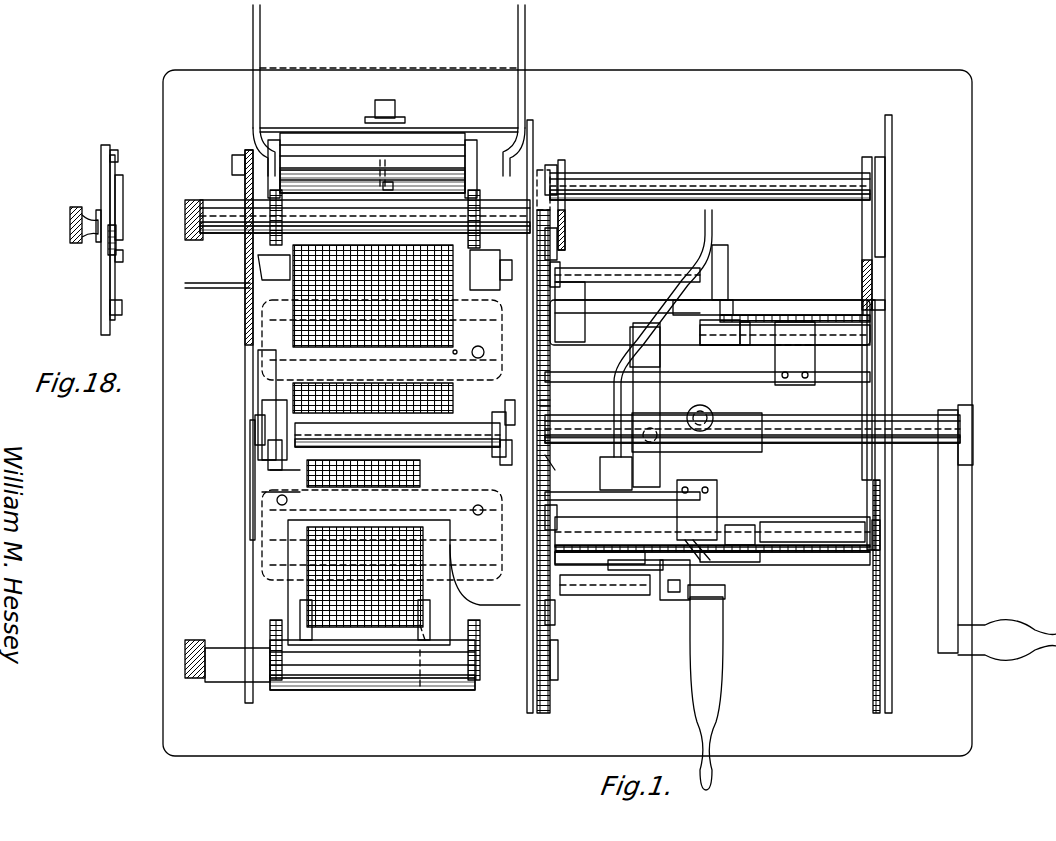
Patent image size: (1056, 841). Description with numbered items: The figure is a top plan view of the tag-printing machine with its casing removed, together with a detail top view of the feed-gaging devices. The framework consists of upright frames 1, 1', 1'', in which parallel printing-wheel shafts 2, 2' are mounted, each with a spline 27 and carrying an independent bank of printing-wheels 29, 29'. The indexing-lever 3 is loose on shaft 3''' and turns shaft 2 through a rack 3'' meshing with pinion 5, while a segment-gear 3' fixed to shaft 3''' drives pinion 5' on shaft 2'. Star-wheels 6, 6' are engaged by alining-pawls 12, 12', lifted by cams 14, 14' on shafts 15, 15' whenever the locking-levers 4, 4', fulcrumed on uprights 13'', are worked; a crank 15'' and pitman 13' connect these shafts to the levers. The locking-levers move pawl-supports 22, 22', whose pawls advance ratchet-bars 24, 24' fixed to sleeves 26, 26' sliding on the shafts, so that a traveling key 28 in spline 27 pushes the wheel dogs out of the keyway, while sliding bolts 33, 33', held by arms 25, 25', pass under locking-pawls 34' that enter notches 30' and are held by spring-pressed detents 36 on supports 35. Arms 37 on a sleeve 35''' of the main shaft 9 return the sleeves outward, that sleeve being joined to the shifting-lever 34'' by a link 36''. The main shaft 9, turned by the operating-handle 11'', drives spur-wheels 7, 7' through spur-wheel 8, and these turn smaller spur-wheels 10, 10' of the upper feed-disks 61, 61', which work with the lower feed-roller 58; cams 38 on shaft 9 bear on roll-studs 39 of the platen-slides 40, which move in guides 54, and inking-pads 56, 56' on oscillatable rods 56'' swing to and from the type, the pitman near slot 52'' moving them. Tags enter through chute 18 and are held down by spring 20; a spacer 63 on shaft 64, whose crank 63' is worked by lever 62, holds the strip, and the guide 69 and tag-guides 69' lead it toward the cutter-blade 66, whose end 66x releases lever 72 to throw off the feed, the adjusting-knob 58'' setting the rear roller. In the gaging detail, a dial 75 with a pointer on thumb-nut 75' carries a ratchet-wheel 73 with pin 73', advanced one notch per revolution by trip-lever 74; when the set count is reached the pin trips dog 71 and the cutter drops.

In FIG. 1, the upright frame 1 is at (567, 413).
In FIG. 1, the upright frame 1' is at (510, 422).
In FIG. 1, the upright frame 1'' is at (324, 582).
In FIG. 1, the printing-wheel shaft 2 is at (712, 571).
In FIG. 1, the printing-wheel shaft 2' is at (710, 334).
In FIG. 1, the indexing-lever 3 is at (846, 318).
In FIG. 1, the segment-gear 3' is at (894, 219).
In FIG. 1, the rack 3'' is at (856, 506).
In FIG. 1, the shaft 3''' is at (710, 196).
In FIG. 1, the locking-lever 4 is at (716, 548).
In FIG. 1, the locking-lever 4' is at (642, 348).
In FIG. 1, the pinion 5 is at (892, 535).
In FIG. 1, the pinion 5' is at (894, 297).
In FIG. 1, the star-wheel 6 is at (559, 612).
In FIG. 1, the star-wheel 6' is at (571, 312).
In FIG. 1, the spur-wheel 7 is at (560, 517).
In FIG. 1, the spur-wheel 7' is at (567, 272).
In FIG. 1, the spur-wheel 8 is at (551, 407).
In FIG. 1, the main operating-shaft 9 is at (627, 441).
In FIG. 1, the spur-wheel 10 is at (560, 461).
In FIG. 1, the spur-wheel 10' is at (571, 181).
In FIG. 1, the crank 11'' is at (978, 532).
In FIG. 1, the alining-pawl 12 is at (566, 665).
In FIG. 1, the alining-pawl 12' is at (572, 244).
In FIG. 1, the pitman 13' is at (667, 609).
In FIG. 1, the upright 13'' is at (633, 574).
In FIG. 1, the cam 14 is at (600, 570).
In FIG. 1, the cam 14' is at (627, 290).
In FIG. 1, the shaft 15 is at (605, 606).
In FIG. 1, the shaft 15' is at (627, 287).
In FIG. 1, the crank 15'' is at (671, 333).
In FIG. 1, the chute 18 is at (389, 90).
In FIG. 1, the spring 20 is at (375, 108).
In FIG. 1, the pawl-support 22 is at (605, 593).
In FIG. 1, the pawl-support 22' is at (704, 322).
In FIG. 1, the ratchet-bar 24 is at (738, 571).
In FIG. 1, the ratchet-bar 24' is at (785, 313).
In FIG. 1, the arm 25 is at (716, 508).
In FIG. 1, the arm 25' is at (795, 353).
In FIG. 1, the sleeve 26 is at (755, 522).
In FIG. 1, the sleeve 26' is at (762, 314).
In FIG. 1, the spline 27 is at (833, 530).
In FIG. 1, the traveling key 28 is at (592, 545).
In FIG. 1, the bank of printing-wheels 29 is at (316, 577).
In FIG. 1, the bank of printing-wheels 29' is at (324, 296).
In FIG. 1, the notch 30' is at (472, 344).
In FIG. 1, the sliding bolt 33 is at (622, 489).
In FIG. 1, the sliding bolt 33' is at (707, 368).
In FIG. 1, the locking-pawl 34' is at (355, 340).
In FIG. 1, the shifting-lever 34'' is at (673, 623).
In FIG. 1, the support 35 is at (353, 535).
In FIG. 1, the sleeve 35''' is at (697, 432).
In FIG. 1, the spring-pressed detent 36 is at (331, 431).
In FIG. 1, the link 36'' is at (678, 412).
In FIG. 1, the arm 37 is at (646, 405).
In FIG. 1, the cam 38 is at (255, 420).
In FIG. 1, the roll-stud 39 is at (262, 455).
In FIG. 1, the platen-slide 40 is at (255, 485).
In FIG. 1, the arm 52'' is at (246, 425).
In FIG. 1, the guide 54 is at (258, 368).
In FIG. 1, the inking-pad 56 is at (410, 592).
In FIG. 1, the inking-pad 56' is at (540, 401).
In FIG. 1, the oscillatable rod 56'' is at (411, 670).
In FIG. 1, the lower feed-roller 58 is at (330, 679).
In FIG. 1, the adjusting-knob 58'' is at (189, 201).
In FIG. 1, the feed-disk 61 is at (382, 638).
In FIG. 1, the feed-disk 61' is at (358, 216).
In FIG. 1, the lever 62 is at (365, 213).
In FIG. 1, the spacer 63 is at (411, 144).
In FIG. 1, the crank 63' is at (556, 158).
In FIG. 1, the shaft 64 is at (305, 140).
In FIG. 1, the cutter-blade 66 is at (372, 163).
In FIG. 1, the end of cutter-blade 66x is at (190, 290).
In FIG. 1, the box 69 is at (274, 267).
In FIG. 1, the tag-guide 69' is at (491, 261).
In FIG. 1, the lever 72 is at (245, 272).
In FIG. 18, the dog 71 is at (110, 305).
In FIG. 18, the ratchet-wheel 73 is at (127, 240).
In FIG. 18, the pin 73' is at (133, 262).
In FIG. 18, the trip-lever 74 is at (121, 198).
In FIG. 18, the dial 75 is at (74, 243).
In FIG. 18, the thumb-nut 75' is at (59, 231).